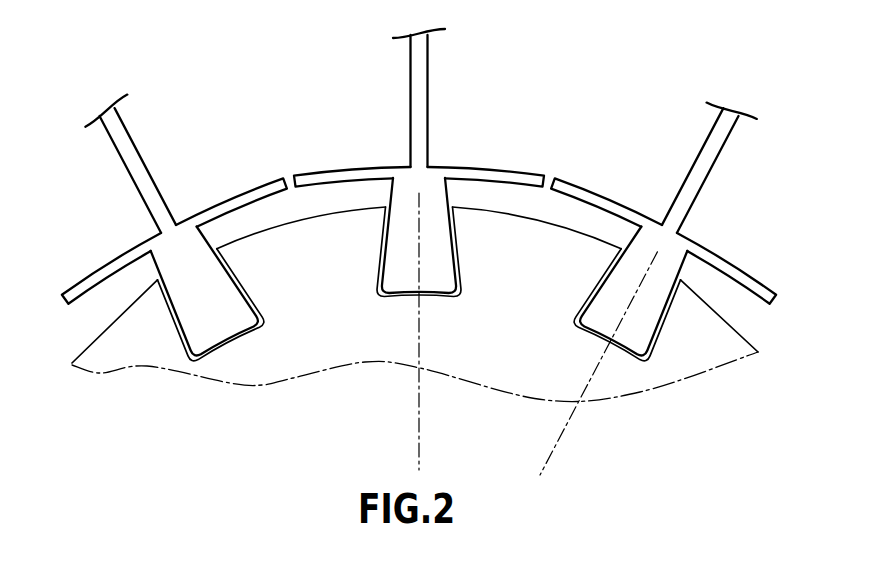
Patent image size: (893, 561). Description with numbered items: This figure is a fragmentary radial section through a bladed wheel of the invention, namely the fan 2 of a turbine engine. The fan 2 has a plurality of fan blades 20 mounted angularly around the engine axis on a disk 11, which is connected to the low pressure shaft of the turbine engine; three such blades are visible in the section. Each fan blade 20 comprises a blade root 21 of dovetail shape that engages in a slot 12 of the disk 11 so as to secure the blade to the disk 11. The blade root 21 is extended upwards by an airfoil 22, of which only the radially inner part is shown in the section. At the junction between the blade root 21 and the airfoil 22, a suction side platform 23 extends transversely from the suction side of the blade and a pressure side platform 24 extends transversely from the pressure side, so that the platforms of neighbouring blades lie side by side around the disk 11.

The fan 2 is at (569, 105).
The disk 11 is at (138, 352).
The slot 12 is at (249, 334).
The fan blade 20 is at (143, 147).
The blade root 21 is at (225, 325).
The airfoil 22 is at (116, 152).
The suction side platform 23 is at (232, 204).
The pressure side platform 24 is at (95, 276).